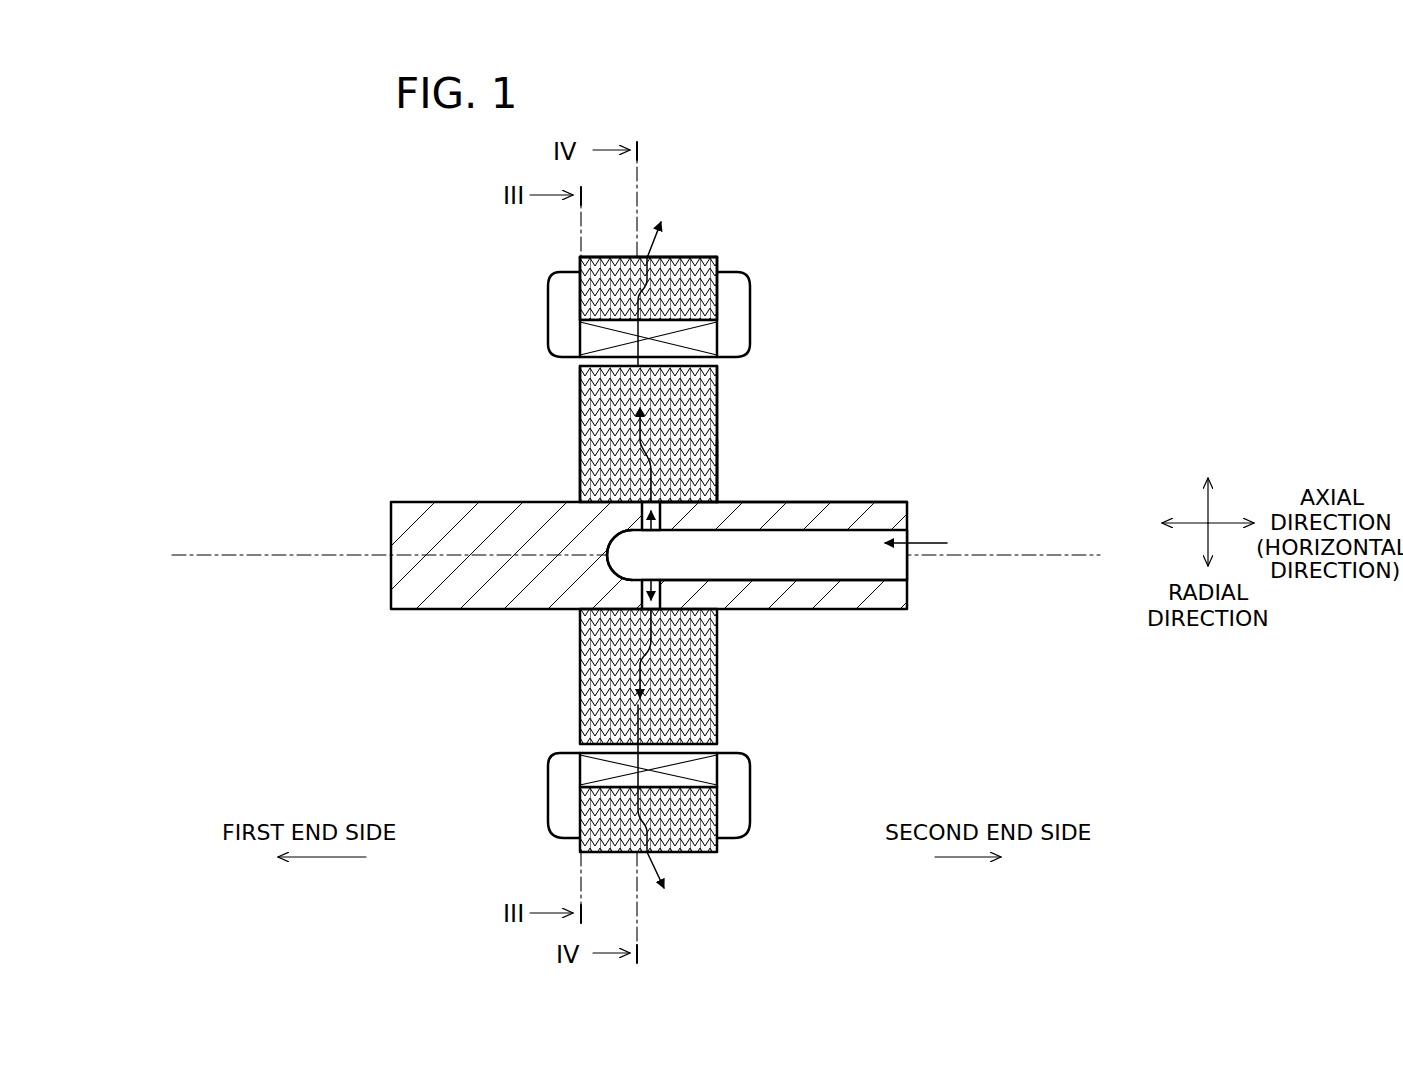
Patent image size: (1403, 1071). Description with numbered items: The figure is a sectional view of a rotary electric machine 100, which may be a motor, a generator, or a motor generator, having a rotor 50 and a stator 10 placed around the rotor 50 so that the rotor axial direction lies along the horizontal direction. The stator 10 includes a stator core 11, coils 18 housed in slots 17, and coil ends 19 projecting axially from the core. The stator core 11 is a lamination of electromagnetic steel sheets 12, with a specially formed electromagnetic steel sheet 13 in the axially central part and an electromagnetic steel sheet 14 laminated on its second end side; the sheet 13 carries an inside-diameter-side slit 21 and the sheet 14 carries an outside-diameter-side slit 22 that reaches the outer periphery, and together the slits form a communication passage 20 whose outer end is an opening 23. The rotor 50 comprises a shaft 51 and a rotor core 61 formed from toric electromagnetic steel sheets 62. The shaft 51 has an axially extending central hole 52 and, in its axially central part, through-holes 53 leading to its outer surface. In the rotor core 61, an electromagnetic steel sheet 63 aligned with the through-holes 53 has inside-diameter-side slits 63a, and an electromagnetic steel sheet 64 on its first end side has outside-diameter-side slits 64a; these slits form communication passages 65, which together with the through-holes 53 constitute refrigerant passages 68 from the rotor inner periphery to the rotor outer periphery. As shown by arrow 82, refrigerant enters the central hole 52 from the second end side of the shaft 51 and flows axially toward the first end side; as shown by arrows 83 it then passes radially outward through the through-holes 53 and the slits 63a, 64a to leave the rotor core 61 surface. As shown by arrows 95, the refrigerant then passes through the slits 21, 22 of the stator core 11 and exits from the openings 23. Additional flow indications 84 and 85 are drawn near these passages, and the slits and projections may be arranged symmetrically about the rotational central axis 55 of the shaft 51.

The rotary electric machine 100 is at (208, 394).
The stator 10 is at (649, 213).
The stator core 11 is at (578, 264).
The electromagnetic steel sheets 12 is at (718, 265).
The electromagnetic steel sheet 13 is at (578, 258).
The electromagnetic steel sheet 14 is at (672, 258).
The slots 17 is at (745, 321).
The coils 18 is at (580, 338).
The coil ends 19 is at (548, 293).
The communication passage 20 is at (673, 159).
The inside-diameter-side slit 21 is at (625, 258).
The outside-diameter-side slit 22 is at (702, 179).
The opening 23 is at (647, 257).
The rotor 50 is at (701, 519).
The shaft 51 is at (863, 502).
The central hole 52 is at (890, 568).
The through-holes 53 is at (606, 546).
The rotational central axis 55 is at (1080, 556).
The rotor core 61 is at (723, 428).
The electromagnetic steel sheets 62 is at (718, 395).
The electromagnetic steel sheet 63 is at (846, 444).
The inside-diameter-side slits 63a is at (718, 478).
The electromagnetic steel sheet 64 is at (489, 440).
The outside-diameter-side slits 64a is at (640, 437).
The communication passages 65 is at (580, 468).
The refrigerant passages 68 is at (619, 414).
The arrow 82 is at (947, 543).
The arrows 83 is at (705, 557).
The first radial passage 84 is at (638, 406).
The discharge port 85 is at (665, 232).
The arrows 95 is at (750, 755).